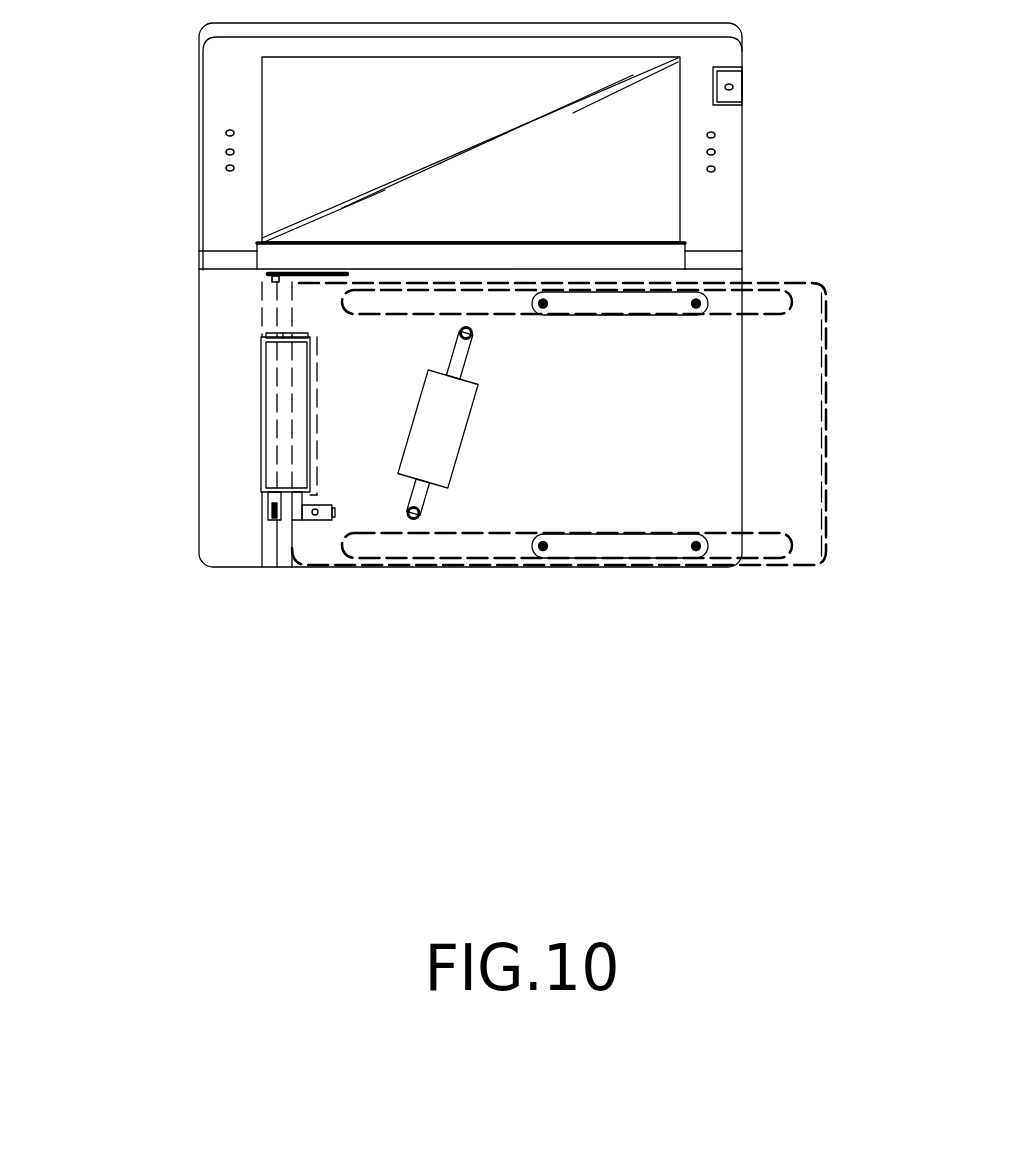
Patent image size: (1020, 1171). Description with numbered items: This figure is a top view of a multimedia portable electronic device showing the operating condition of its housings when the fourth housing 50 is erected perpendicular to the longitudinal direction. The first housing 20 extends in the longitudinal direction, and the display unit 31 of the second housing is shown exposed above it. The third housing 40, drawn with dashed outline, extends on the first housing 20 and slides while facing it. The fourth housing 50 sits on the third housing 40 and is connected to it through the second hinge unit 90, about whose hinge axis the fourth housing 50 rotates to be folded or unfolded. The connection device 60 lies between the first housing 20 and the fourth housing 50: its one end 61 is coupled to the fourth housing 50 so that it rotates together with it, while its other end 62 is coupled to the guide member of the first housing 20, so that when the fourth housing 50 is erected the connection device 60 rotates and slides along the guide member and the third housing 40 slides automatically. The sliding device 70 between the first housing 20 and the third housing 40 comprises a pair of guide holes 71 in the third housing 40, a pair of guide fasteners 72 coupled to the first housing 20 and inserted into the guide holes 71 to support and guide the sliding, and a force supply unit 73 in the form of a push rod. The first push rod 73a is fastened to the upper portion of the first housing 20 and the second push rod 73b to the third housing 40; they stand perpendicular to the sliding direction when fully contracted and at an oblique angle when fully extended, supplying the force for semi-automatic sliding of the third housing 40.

The first housing 20 is at (198, 507).
The display unit 31 is at (720, 203).
The third housing 40 is at (805, 406).
The fourth housing 50 is at (270, 557).
The connection device 60 is at (72, 210).
The one end of the connection device 61 is at (338, 273).
The other end of the connection device 62 is at (277, 282).
The sliding device 70 is at (410, 468).
The guide holes 71 is at (358, 544).
The guide fasteners 72 is at (620, 550).
The force supply unit 73 is at (465, 703).
The first push rod 73a is at (473, 340).
The second push rod 73b is at (419, 517).
The second hinge unit 90 is at (287, 417).